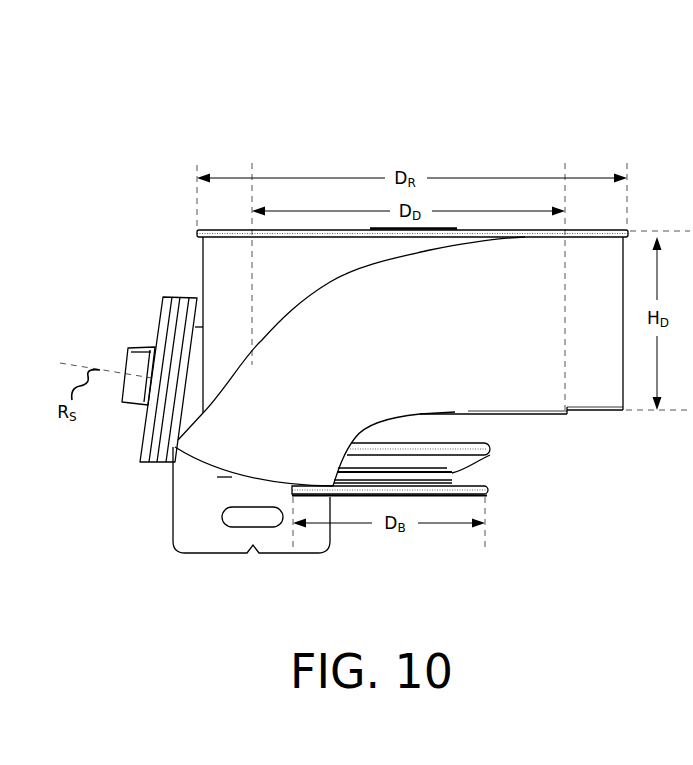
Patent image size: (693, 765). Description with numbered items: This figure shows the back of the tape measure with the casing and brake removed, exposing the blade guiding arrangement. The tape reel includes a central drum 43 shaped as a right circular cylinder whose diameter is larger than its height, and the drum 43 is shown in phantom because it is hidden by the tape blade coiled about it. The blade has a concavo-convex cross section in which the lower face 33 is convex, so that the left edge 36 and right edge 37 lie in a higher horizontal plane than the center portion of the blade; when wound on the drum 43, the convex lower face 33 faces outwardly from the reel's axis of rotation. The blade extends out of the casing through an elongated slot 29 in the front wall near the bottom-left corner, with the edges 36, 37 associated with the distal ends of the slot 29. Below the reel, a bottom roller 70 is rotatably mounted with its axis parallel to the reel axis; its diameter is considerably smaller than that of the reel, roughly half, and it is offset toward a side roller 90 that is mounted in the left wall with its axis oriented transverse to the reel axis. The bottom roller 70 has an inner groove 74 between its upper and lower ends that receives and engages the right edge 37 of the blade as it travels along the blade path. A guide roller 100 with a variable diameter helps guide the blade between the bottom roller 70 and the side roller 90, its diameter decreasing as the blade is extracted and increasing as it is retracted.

The guide roller 100 is at (600, 119).
The right edge 37 is at (297, 310).
The central drum 43 is at (568, 336).
The left edge 36 is at (365, 430).
The lower face 33 is at (254, 361).
The side roller 90 is at (160, 428).
The elongated slot 29 is at (197, 535).
The inner groove 74 is at (512, 471).
The bottom roller 70 is at (508, 505).